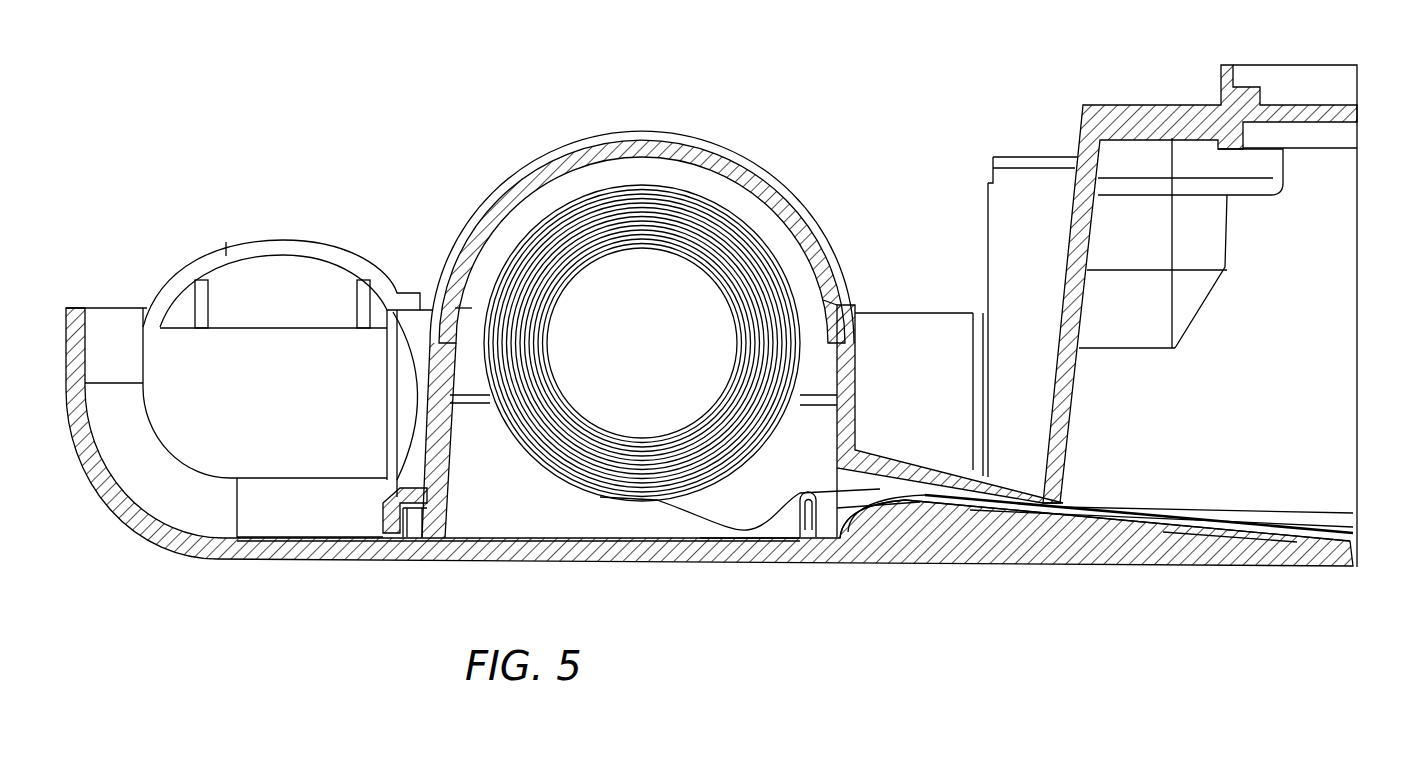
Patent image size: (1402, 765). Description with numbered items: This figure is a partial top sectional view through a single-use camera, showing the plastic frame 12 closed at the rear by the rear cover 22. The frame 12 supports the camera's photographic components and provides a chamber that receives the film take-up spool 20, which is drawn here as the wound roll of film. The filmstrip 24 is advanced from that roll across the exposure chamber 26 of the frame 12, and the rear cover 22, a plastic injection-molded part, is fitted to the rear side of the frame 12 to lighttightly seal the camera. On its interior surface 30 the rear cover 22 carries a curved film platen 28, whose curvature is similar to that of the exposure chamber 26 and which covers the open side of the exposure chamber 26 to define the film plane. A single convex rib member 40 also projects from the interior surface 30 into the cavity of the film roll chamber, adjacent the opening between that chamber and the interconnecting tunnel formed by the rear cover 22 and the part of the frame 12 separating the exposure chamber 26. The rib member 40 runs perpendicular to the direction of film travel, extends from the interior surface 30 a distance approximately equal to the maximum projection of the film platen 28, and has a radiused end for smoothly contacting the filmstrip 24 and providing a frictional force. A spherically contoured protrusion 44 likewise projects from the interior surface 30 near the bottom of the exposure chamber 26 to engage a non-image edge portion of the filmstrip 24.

The frame 12 is at (500, 190).
The film take-up spool 20 is at (630, 255).
The rear cover 22 is at (318, 548).
The filmstrip 24 is at (706, 513).
The exposure chamber 26 is at (1247, 272).
The curved film platen 28 is at (932, 517).
The interior surface 30 is at (770, 543).
The rib member 40 is at (813, 533).
The protrusion 44 is at (1097, 527).